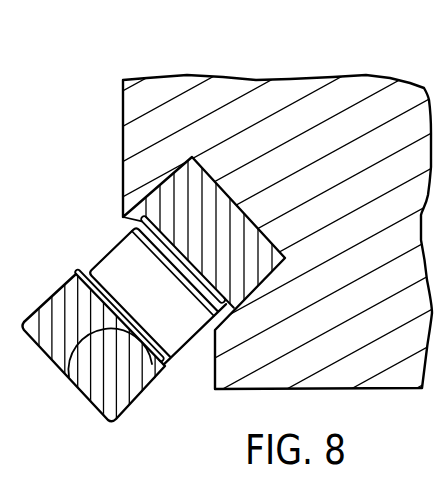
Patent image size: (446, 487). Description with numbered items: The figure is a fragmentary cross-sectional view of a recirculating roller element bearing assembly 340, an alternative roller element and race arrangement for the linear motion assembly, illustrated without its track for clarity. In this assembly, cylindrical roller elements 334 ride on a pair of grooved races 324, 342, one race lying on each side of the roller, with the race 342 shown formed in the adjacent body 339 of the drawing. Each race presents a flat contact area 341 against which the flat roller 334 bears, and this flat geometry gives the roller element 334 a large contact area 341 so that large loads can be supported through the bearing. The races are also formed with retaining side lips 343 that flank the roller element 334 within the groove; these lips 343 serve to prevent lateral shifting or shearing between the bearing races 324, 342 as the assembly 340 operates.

The grooved race 324 is at (135, 404).
The cylindrical roller element 334 is at (112, 250).
The housing block 339 is at (243, 77).
The recirculating roller element bearing assembly 340 is at (165, 267).
The flat contact area 341 is at (69, 377).
The grooved race 342 is at (258, 210).
The retaining side lip 343 is at (75, 274).